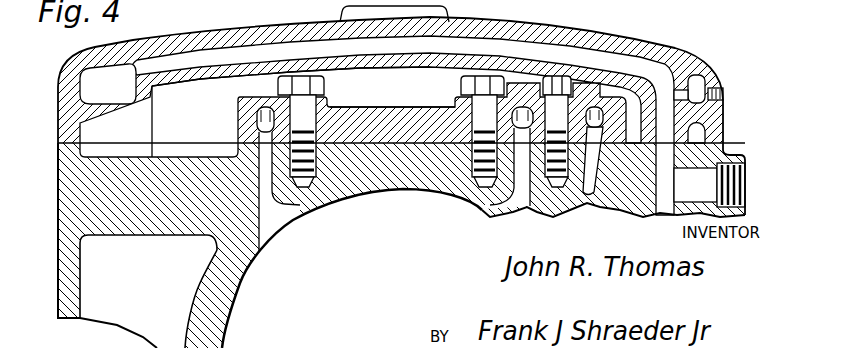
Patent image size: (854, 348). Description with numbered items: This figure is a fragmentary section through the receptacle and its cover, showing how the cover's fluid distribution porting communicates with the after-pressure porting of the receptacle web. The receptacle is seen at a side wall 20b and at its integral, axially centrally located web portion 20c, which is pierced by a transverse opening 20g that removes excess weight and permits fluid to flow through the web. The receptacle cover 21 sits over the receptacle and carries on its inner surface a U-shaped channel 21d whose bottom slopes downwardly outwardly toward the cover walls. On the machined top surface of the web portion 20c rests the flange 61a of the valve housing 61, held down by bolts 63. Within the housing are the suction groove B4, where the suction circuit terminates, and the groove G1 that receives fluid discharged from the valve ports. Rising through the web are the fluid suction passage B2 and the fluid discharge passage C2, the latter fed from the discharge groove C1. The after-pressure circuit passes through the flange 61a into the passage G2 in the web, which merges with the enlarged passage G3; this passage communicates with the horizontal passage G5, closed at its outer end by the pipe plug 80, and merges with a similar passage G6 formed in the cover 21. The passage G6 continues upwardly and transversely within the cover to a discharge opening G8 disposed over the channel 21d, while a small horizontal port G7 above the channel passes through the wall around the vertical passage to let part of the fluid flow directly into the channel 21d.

The receptacle cover 21 is at (283, 25).
The U-shaped channel 21d is at (710, 41).
The suction groove B4 is at (263, 117).
The bolts 63 is at (295, 88).
The fluid discharge groove C1 is at (522, 105).
The fluid discharge passage C2 is at (518, 137).
The groove G1 is at (587, 105).
The passage G2 is at (660, 115).
The horizontal port G7 is at (678, 92).
The passage G6 is at (723, 93).
The enlarged passage G3 is at (693, 125).
The horizontal passage G5 is at (697, 178).
The pipe plug 80 is at (740, 178).
The valve housing 61 is at (193, 123).
The flange 61a is at (430, 118).
The discharge opening G8 is at (170, 87).
The fluid suction passage B2 is at (278, 216).
The transverse opening 20g is at (110, 270).
The side wall 20b is at (73, 290).
The web portion 20c is at (213, 207).